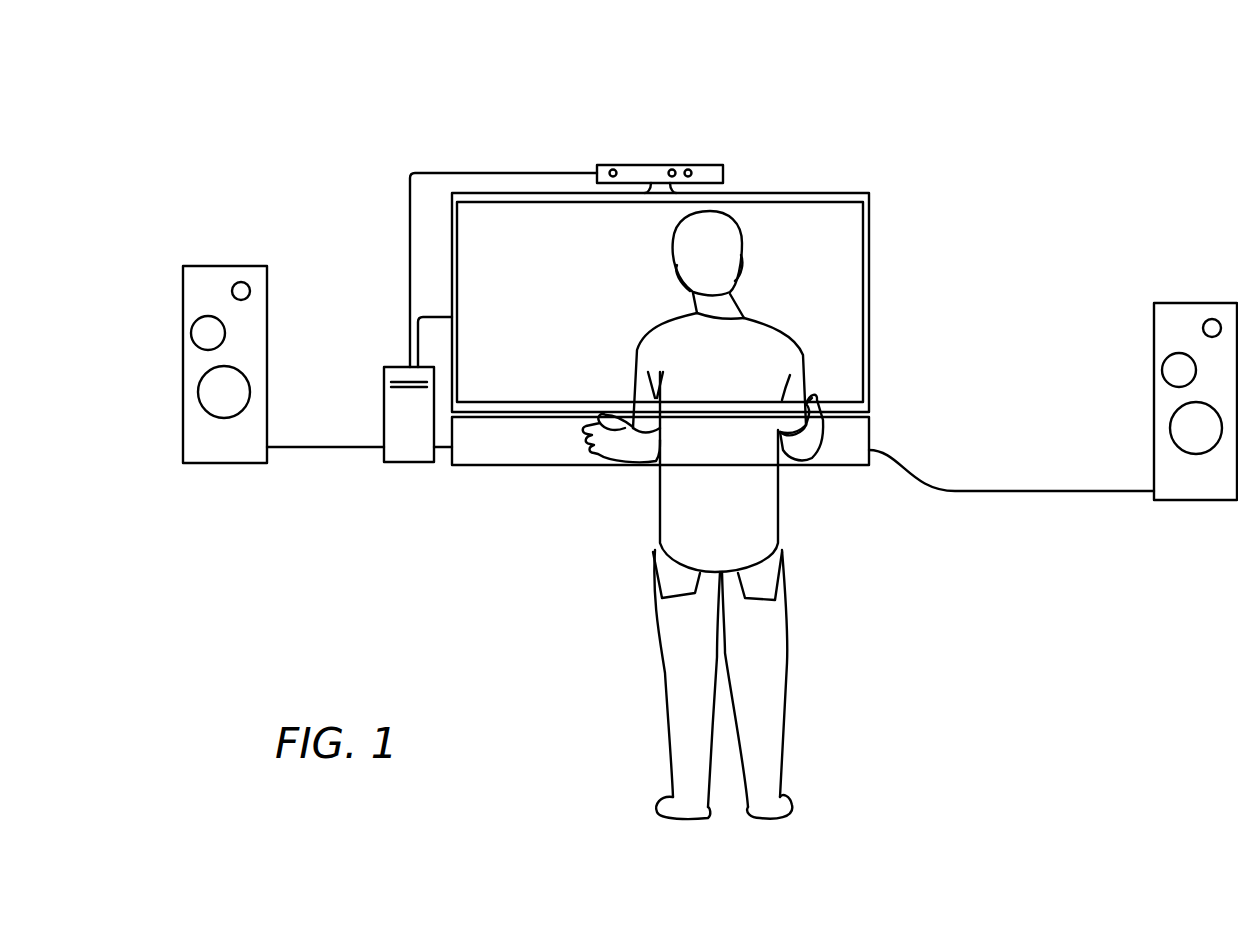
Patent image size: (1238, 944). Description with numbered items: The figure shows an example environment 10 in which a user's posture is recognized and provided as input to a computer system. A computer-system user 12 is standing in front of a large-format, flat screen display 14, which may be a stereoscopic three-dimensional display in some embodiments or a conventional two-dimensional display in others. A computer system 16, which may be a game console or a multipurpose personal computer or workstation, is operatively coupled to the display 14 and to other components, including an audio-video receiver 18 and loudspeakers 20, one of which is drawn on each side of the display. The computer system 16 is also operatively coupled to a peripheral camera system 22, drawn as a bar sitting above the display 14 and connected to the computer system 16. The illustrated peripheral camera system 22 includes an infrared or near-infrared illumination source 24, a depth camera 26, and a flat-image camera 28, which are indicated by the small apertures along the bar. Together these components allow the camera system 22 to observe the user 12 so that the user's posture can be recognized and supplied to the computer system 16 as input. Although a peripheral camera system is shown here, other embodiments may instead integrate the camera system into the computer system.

The environment 10 is at (180, 553).
The computer-system user 12 is at (759, 367).
The flat screen display 14 is at (524, 293).
The computer system 16 is at (419, 449).
The audio-video receiver 18 is at (524, 449).
The loudspeakers 20 is at (212, 453).
The peripheral camera system 22 is at (713, 165).
The infrared or near infrared illumination source 24 is at (676, 150).
The depth camera 26 is at (690, 158).
The flat-image camera 28 is at (617, 150).